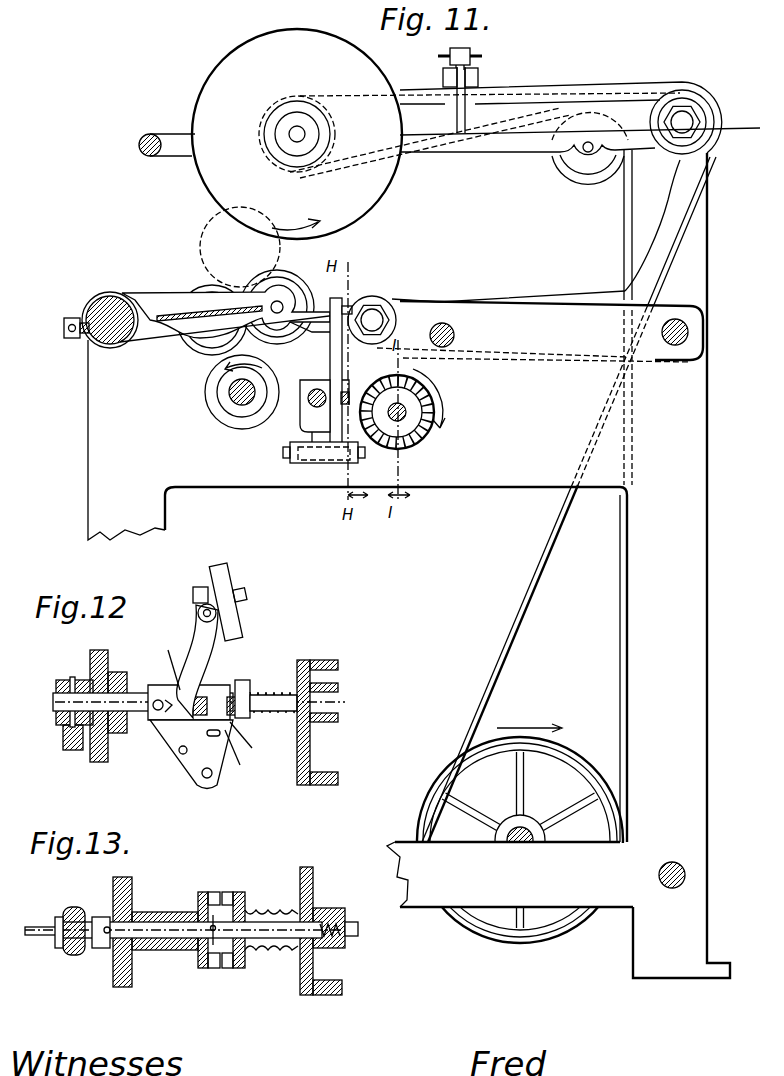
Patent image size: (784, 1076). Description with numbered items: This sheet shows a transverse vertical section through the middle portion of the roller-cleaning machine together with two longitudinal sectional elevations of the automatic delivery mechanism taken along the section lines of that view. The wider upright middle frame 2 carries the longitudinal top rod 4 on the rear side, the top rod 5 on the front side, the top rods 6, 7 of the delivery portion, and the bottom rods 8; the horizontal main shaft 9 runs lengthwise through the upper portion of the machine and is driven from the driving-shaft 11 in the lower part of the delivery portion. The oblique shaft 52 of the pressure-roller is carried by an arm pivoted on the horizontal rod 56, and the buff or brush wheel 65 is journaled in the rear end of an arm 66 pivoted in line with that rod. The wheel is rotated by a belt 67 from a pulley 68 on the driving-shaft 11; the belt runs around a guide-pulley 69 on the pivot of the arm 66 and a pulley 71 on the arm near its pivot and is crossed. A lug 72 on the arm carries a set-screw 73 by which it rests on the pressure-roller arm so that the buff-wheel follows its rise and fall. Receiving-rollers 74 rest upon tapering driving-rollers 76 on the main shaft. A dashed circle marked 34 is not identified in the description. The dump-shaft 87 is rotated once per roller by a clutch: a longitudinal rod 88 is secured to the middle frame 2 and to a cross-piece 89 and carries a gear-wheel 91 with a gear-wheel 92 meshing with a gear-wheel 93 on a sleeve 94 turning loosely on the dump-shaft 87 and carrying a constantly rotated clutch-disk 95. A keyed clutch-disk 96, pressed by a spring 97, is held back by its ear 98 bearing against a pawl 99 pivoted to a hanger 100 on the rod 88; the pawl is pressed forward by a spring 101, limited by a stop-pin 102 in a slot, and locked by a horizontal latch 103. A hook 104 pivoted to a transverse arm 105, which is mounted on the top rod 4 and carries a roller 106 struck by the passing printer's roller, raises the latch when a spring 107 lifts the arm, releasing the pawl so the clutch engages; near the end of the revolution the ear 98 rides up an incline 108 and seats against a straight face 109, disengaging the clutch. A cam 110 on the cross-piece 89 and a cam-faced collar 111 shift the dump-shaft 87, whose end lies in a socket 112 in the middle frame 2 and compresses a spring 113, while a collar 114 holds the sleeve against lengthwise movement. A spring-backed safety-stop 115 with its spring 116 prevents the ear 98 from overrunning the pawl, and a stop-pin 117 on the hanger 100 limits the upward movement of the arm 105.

In FIG. 11, the middle frame 2 is at (409, 530).
In FIG. 12, the middle frame 2 is at (324, 723).
In FIG. 13, the middle frame 2 is at (338, 994).
In FIG. 11, the longitudinal top rod 4 is at (104, 298).
In FIG. 11, the longitudinal top rod 5 is at (382, 316).
In FIG. 11, the longitudinal top rod 6 is at (449, 335).
In FIG. 11, the longitudinal top rod 7 is at (690, 332).
In FIG. 11, the bottom rods 8 is at (685, 875).
In FIG. 11, the main shaft 9 is at (232, 397).
In FIG. 11, the driving-shaft 11 is at (518, 852).
In FIG. 11, the roll 34 is at (200, 247).
In FIG. 11, the oblique shaft 52 is at (145, 140).
In FIG. 11, the horizontal rod 56 is at (694, 122).
In FIG. 11, the buff or brush wheel 65 is at (297, 134).
In FIG. 11, the arm 66 is at (508, 150).
In FIG. 11, the belt 67 is at (530, 572).
In FIG. 11, the pulley 68 is at (560, 735).
In FIG. 11, the guide-pulley 69 is at (700, 100).
In FIG. 11, the pulley 71 is at (580, 184).
In FIG. 11, the lug 72 is at (478, 78).
In FIG. 11, the set-screw 73 is at (452, 62).
In FIG. 11, the receiving-rollers 74 is at (192, 290).
In FIG. 11, the tapering driving-rollers 76 is at (205, 392).
In FIG. 11, the dump-shaft 87 is at (408, 400).
In FIG. 12, the dump-shaft 87 is at (199, 702).
In FIG. 13, the dump-shaft 87 is at (187, 939).
In FIG. 11, the longitudinal rod 88 is at (308, 404).
In FIG. 12, the longitudinal rod 88 is at (338, 698).
In FIG. 12, the cross-piece 89 is at (64, 735).
In FIG. 13, the cross-piece 89 is at (66, 910).
In FIG. 12, the gear-wheel 91 is at (94, 758).
In FIG. 12, the gear-wheel 92 is at (116, 680).
In FIG. 13, the gear-wheel 93 is at (128, 990).
In FIG. 13, the sleeve 94 is at (160, 951).
In FIG. 13, the clutch-disk 95 is at (203, 968).
In FIG. 11, the clutch-disk 96 is at (443, 408).
In FIG. 13, the clutch-disk 96 is at (240, 968).
In FIG. 13, the spring 97 is at (278, 954).
In FIG. 11, the ear 98 is at (396, 410).
In FIG. 12, the ear 98 is at (232, 696).
In FIG. 11, the pawl 99 is at (338, 463).
In FIG. 12, the pawl 99 is at (200, 768).
In FIG. 11, the hanger 100 is at (322, 463).
In FIG. 12, the hanger 100 is at (152, 686).
In FIG. 12, the spring 101 is at (180, 753).
In FIG. 12, the stop-pin 102 is at (206, 733).
In FIG. 11, the latch 103 is at (350, 395).
In FIG. 12, the latch 103 is at (200, 697).
In FIG. 11, the hook 104 is at (334, 340).
In FIG. 12, the hook 104 is at (196, 632).
In FIG. 11, the transverse arm 105 is at (148, 296).
In FIG. 12, the transverse arm 105 is at (200, 588).
In FIG. 11, the roller 106 is at (262, 273).
In FIG. 12, the roller 106 is at (228, 566).
In FIG. 11, the spring 107 is at (172, 340).
In FIG. 12, the incline 108 is at (247, 754).
In FIG. 12, the straight face 109 is at (255, 739).
In FIG. 13, the cam 110 is at (88, 948).
In FIG. 13, the cam-faced collar 111 is at (100, 916).
In FIG. 13, the socket 112 is at (336, 948).
In FIG. 13, the spring 113 is at (322, 910).
In FIG. 13, the collar 114 is at (206, 918).
In FIG. 11, the safety-stop 115 is at (308, 392).
In FIG. 12, the safety-stop 115 is at (246, 680).
In FIG. 12, the spring 116 is at (272, 690).
In FIG. 11, the stop-pin 117 is at (345, 382).
In FIG. 12, the stop-pin 117 is at (165, 665).